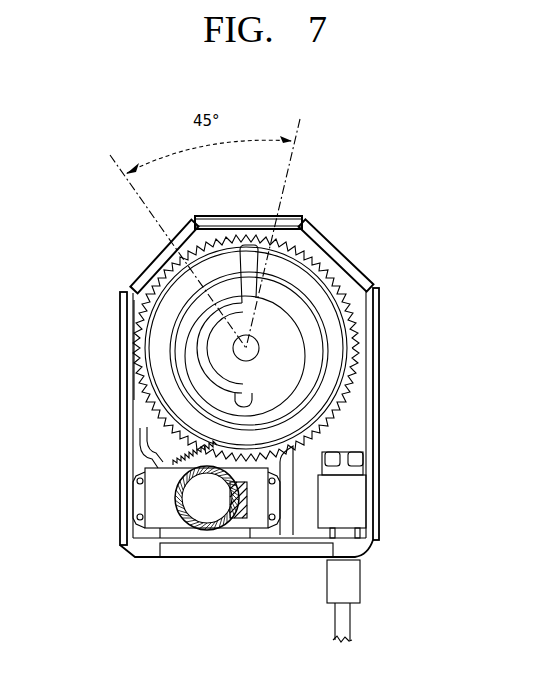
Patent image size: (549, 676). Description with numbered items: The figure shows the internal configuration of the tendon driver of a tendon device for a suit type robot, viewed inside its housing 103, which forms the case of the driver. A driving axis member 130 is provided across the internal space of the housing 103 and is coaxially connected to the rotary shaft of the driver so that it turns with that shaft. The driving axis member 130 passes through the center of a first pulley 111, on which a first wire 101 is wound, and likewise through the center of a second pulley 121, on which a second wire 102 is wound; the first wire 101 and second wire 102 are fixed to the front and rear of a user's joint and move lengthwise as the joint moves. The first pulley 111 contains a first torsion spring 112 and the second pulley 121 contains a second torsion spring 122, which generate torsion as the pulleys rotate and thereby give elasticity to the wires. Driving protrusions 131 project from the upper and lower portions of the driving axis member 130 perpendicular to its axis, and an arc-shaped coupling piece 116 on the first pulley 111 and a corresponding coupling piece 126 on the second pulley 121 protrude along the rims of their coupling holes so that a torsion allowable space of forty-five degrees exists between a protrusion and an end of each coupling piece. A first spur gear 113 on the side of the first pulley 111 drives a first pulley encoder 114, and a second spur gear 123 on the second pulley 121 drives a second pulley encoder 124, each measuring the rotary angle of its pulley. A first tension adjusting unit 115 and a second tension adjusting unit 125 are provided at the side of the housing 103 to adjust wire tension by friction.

The first wire 101 is at (407, 601).
The second wire 102 is at (340, 612).
The housing 103 is at (150, 258).
The first pulley 111 is at (320, 348).
The second pulley 121 is at (355, 422).
The first torsion spring 112 is at (320, 346).
The second torsion spring 122 is at (318, 300).
The first spur gear 113 is at (246, 201).
The second spur gear 123 is at (236, 216).
The first pulley encoder 114 is at (185, 535).
The second pulley encoder 124 is at (202, 512).
The first tension adjusting unit 115 is at (397, 495).
The second tension adjusting unit 125 is at (353, 501).
The coupling piece 116 is at (73, 350).
The coupling piece 126 is at (140, 334).
The driving axis member 130 is at (292, 356).
The driving protrusions 131 is at (270, 292).